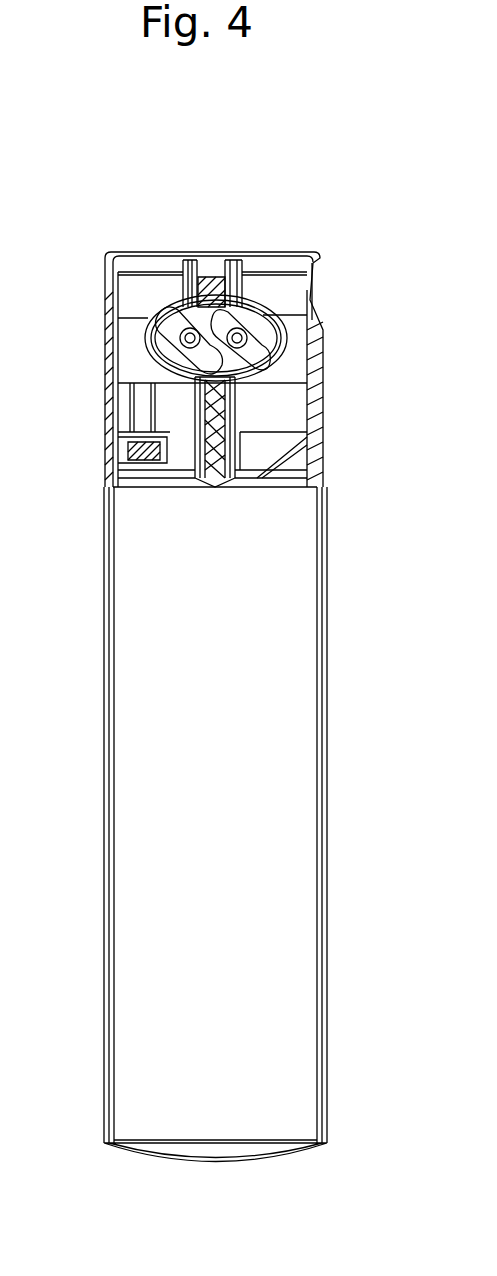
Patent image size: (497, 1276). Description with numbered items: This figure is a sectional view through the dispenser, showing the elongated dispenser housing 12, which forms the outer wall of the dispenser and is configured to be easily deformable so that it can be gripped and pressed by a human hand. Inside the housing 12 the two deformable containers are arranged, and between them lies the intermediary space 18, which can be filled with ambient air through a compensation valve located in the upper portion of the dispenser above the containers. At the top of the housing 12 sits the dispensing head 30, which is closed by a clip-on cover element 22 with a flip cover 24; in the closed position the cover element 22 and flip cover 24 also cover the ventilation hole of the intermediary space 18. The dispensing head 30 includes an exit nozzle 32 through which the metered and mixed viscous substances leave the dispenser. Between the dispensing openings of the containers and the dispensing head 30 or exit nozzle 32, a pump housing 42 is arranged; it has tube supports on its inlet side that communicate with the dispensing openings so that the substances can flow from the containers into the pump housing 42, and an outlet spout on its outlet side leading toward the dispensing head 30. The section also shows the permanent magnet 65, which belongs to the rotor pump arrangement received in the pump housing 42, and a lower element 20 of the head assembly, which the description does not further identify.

The dispenser housing 12 is at (327, 920).
The intermediary space 18 is at (220, 1148).
The lower support block 20 is at (143, 450).
The cover element 22 is at (322, 347).
The flip cover 24 is at (260, 250).
The dispensing head 30 is at (253, 290).
The exit nozzle 32 is at (208, 273).
The pump housing 42 is at (147, 343).
The permanent magnet 65 is at (177, 318).